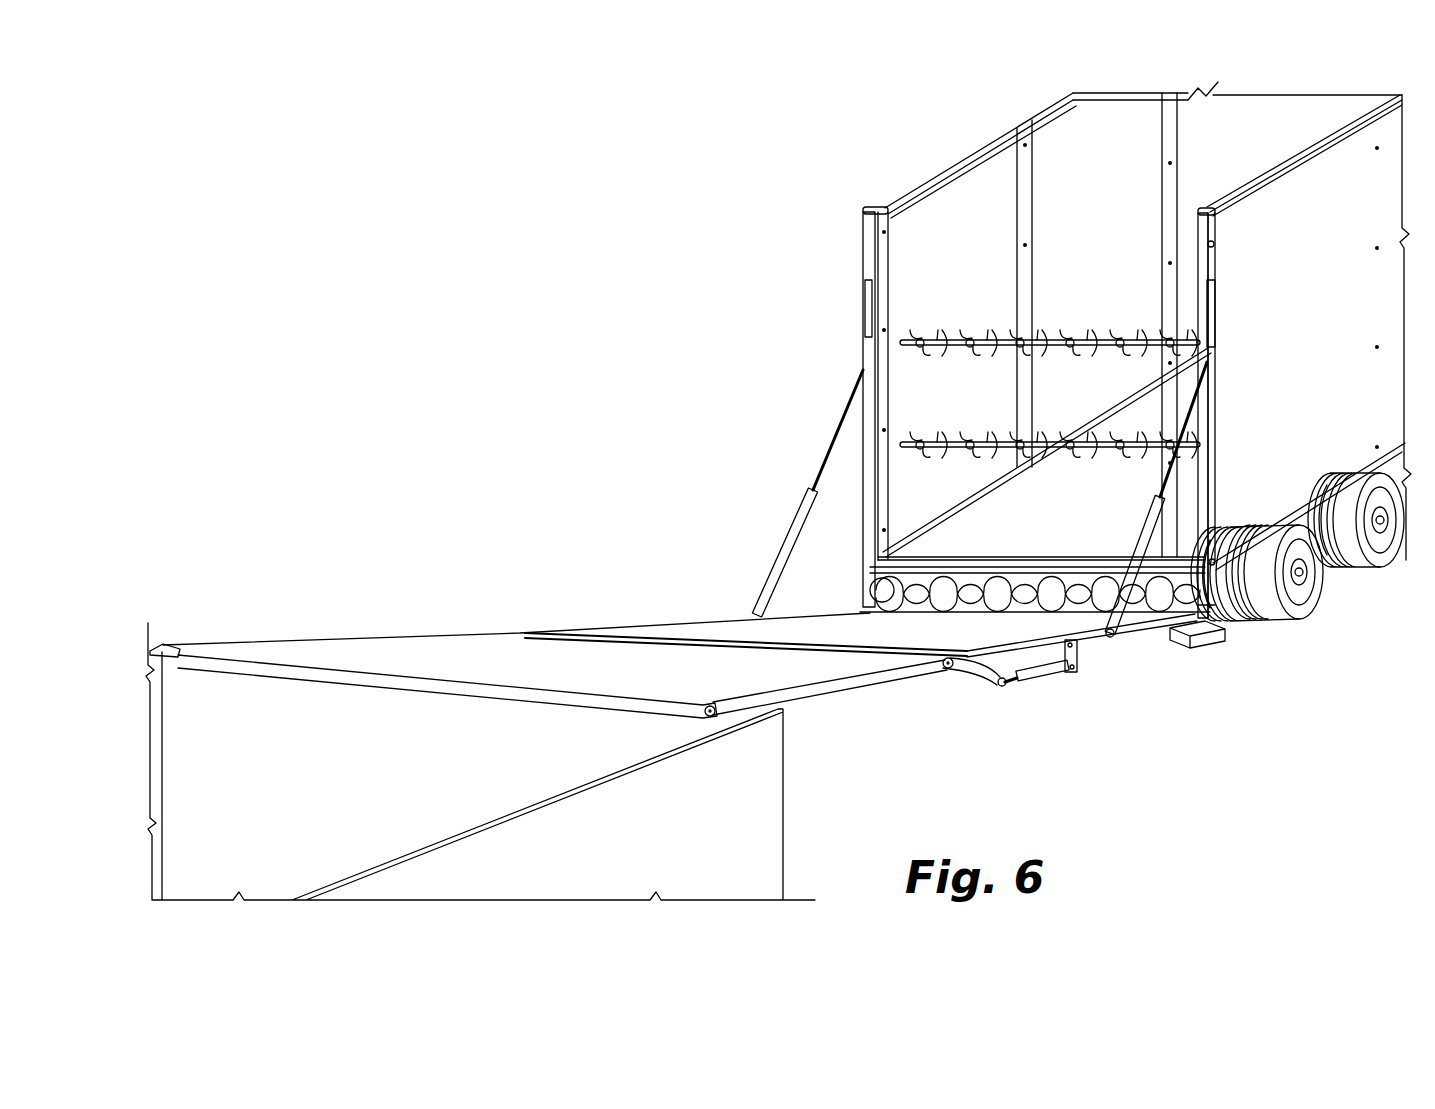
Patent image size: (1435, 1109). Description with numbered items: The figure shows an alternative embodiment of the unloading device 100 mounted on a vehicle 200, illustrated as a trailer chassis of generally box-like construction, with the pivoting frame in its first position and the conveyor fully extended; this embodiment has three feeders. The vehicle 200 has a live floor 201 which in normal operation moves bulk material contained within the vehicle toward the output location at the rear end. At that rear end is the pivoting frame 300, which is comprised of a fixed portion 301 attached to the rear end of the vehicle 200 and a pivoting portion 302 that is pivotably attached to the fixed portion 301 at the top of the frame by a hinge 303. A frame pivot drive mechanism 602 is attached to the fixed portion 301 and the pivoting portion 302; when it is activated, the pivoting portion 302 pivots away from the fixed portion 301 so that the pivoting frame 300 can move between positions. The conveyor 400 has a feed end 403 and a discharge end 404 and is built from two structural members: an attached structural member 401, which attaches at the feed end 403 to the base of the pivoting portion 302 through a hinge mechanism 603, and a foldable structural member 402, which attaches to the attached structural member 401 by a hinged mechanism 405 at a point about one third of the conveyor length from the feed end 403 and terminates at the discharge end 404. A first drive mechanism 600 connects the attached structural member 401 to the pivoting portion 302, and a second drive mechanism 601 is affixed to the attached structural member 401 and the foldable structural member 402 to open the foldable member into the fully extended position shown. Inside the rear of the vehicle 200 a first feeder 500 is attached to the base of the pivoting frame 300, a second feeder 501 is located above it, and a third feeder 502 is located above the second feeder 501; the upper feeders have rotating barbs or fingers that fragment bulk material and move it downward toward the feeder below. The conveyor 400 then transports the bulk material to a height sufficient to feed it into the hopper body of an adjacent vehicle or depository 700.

The unloading device 100 is at (681, 410).
The vehicle 200 is at (1117, 155).
The live floor 201 is at (1117, 490).
The pivoting frame 300 is at (1228, 228).
The fixed portion 301 is at (1213, 208).
The pivoting portion 302 is at (862, 222).
The hinge 303 is at (875, 210).
The conveyor 400 is at (978, 725).
The attached structural member 401 is at (715, 630).
The foldable structural member 402 is at (400, 655).
The feed end 403 is at (1210, 624).
The discharge end 404 is at (205, 643).
The hinged mechanism 405 is at (542, 632).
The first feeder 500 is at (1150, 590).
The second feeder 501 is at (977, 450).
The third feeder 502 is at (1110, 337).
The first drive mechanism 600 is at (803, 512).
The second drive mechanism 601 is at (1028, 677).
The frame pivot drive mechanism 602 is at (860, 334).
The hinge mechanism 603 is at (1215, 562).
The depository 700 is at (480, 761).